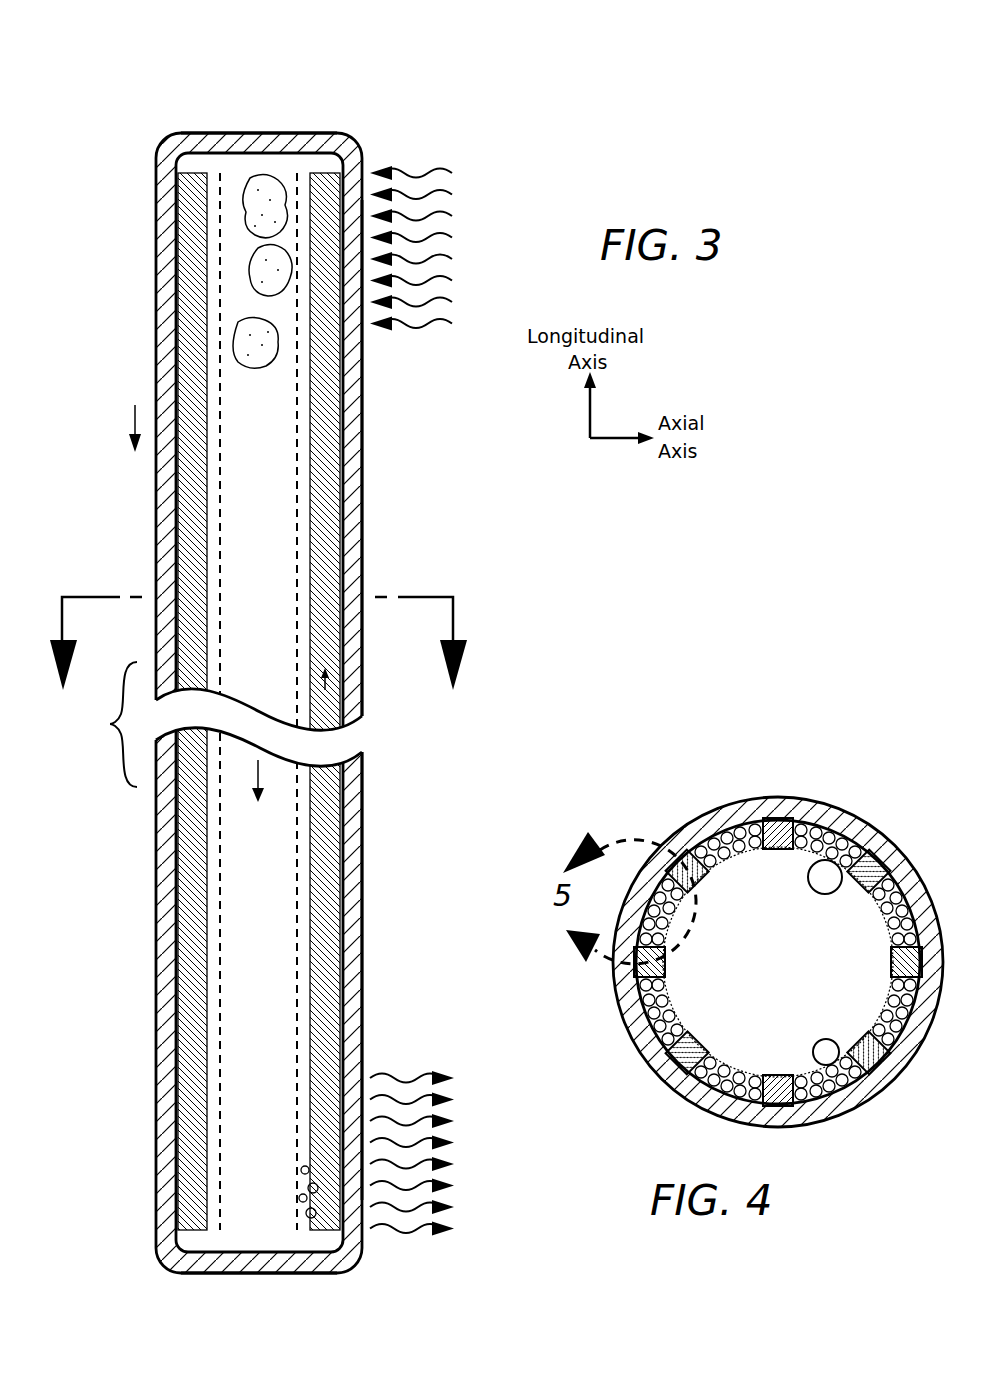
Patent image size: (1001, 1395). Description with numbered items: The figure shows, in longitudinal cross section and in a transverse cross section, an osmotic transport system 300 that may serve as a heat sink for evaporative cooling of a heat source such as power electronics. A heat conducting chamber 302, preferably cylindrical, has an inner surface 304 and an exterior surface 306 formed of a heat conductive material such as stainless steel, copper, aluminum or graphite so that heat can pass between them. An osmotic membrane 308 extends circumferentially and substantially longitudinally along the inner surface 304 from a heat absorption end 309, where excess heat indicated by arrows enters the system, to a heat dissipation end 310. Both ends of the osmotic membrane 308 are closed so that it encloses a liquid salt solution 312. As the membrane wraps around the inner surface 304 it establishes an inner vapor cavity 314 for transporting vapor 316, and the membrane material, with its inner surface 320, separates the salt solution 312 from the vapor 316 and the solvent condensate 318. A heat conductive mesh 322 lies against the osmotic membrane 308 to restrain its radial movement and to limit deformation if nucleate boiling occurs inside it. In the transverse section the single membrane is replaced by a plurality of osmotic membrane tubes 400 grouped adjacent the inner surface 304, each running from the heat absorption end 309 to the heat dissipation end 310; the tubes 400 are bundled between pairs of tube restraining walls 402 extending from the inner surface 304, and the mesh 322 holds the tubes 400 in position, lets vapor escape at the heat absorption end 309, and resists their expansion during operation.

In FIG. 3, the osmotic transport system 300 is at (134, 54).
In FIG. 3, the heat conducting chamber 302 is at (315, 118).
In FIG. 4, the heat conducting chamber 302 is at (668, 1075).
In FIG. 3, the inner surface 304 is at (250, 162).
In FIG. 4, the inner surface 304 is at (640, 1000).
In FIG. 3, the exterior surface 306 is at (175, 145).
In FIG. 3, the osmotic membrane 308 is at (193, 312).
In FIG. 3, the heat absorption end 309 is at (352, 148).
In FIG. 3, the heat dissipation end 310 is at (316, 1292).
In FIG. 3, the liquid salt solution 312 is at (327, 822).
In FIG. 3, the inner vapor cavity 314 is at (243, 945).
In FIG. 3, the vapor 316 is at (270, 355).
In FIG. 3, the solvent condensate 318 is at (297, 1207).
In FIG. 3, the inner surface of the membrane 320 is at (300, 1052).
In FIG. 3, the heat conductive mesh 322 is at (218, 493).
In FIG. 4, the heat conductive mesh 322 is at (720, 864).
In FIG. 4, the osmotic membrane tubes 400 is at (845, 842).
In FIG. 4, the tube restraining walls 402 is at (907, 962).